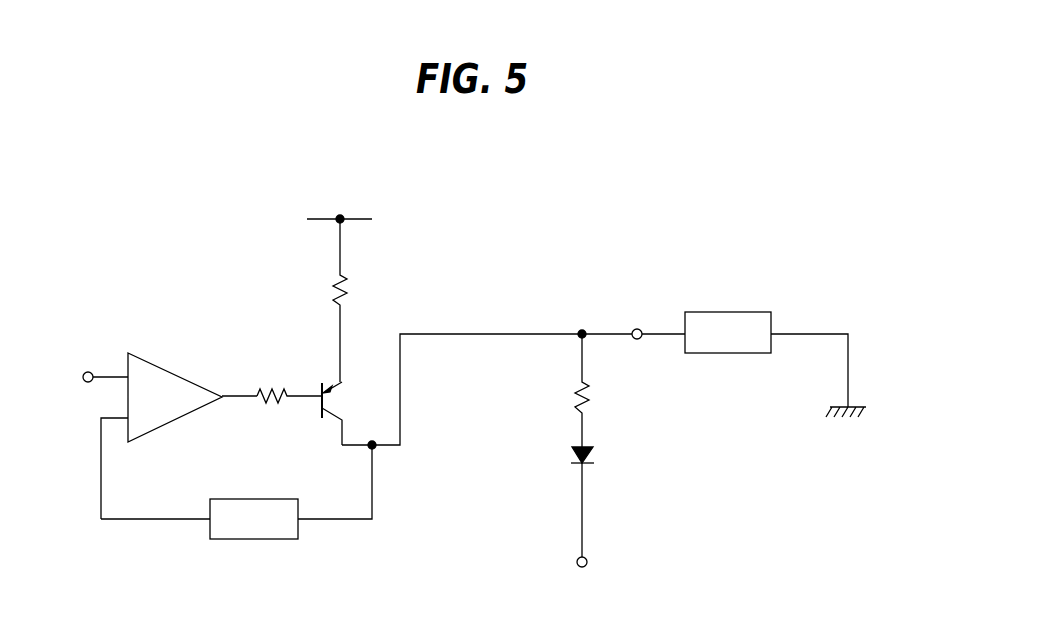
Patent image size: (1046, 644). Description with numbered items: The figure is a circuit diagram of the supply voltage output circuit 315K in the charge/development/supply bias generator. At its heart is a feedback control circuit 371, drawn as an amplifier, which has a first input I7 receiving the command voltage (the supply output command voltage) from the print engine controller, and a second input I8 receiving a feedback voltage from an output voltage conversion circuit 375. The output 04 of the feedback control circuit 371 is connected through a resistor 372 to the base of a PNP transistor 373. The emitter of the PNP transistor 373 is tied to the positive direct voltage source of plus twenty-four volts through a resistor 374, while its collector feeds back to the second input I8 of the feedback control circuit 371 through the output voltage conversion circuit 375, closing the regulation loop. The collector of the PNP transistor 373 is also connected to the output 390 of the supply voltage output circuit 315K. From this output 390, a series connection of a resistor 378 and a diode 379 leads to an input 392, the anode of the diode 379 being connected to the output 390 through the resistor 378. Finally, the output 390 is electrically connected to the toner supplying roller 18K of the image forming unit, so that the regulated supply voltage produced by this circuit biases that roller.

The supply voltage output circuit 315K is at (545, 197).
The feedback control circuit 371 is at (182, 368).
The resistor 372 is at (281, 386).
The PNP transistor 373 is at (327, 420).
The resistor 374 is at (335, 279).
The output voltage conversion circuit 375 is at (252, 542).
The resistor 378 is at (590, 400).
The diode 379 is at (597, 456).
The output 390 is at (637, 328).
The input 392 is at (589, 563).
The toner supplying roller 18K is at (729, 311).
The output 04 is at (234, 390).
The first input I7 is at (93, 372).
The second input I8 is at (116, 418).